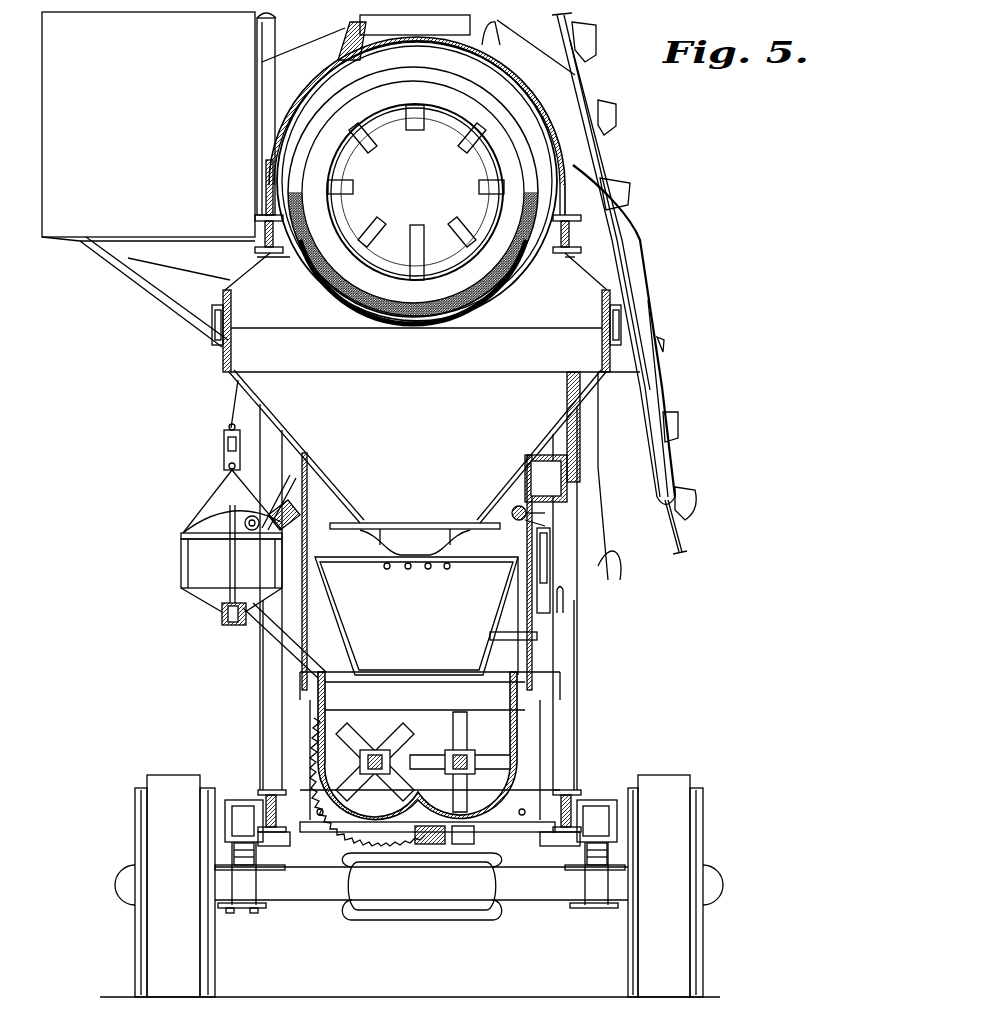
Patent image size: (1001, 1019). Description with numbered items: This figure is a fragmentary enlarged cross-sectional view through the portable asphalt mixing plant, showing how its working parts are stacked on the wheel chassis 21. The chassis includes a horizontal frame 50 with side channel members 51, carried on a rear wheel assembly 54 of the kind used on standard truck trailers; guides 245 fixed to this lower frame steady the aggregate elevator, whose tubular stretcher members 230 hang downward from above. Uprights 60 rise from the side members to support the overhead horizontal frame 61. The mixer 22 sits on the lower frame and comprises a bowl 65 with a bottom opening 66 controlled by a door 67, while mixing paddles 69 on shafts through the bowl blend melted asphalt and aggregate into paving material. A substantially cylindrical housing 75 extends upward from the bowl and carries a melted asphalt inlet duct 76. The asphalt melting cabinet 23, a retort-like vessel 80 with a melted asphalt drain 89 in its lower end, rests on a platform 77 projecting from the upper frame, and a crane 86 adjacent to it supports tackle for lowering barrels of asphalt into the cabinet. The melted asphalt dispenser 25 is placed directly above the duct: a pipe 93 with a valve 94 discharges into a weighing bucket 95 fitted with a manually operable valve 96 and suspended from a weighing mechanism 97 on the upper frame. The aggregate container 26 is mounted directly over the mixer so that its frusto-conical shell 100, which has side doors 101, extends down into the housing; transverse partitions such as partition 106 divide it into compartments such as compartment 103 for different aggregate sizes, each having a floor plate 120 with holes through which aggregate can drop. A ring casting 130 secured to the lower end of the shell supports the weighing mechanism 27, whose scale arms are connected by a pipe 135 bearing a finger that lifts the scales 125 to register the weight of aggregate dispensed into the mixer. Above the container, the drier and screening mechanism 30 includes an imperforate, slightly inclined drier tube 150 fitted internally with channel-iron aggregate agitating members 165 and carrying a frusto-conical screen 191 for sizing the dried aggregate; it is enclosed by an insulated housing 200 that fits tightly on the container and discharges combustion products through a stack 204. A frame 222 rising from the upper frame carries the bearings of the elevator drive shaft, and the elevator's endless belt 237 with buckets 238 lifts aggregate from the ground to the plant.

The asphalt melting cabinet 23 is at (152, 147).
The crane 86 is at (258, 42).
The stack 204 is at (343, 36).
The frame 222 is at (330, 48).
The horizontal frame 61 is at (256, 228).
The retort-like vessel 80 is at (72, 238).
The platform 77 is at (150, 290).
The melted asphalt drain 89 is at (222, 270).
The side doors 101 is at (218, 310).
The transverse partition 106 is at (442, 408).
The compartment 103 is at (272, 386).
The weighing mechanism 97 is at (222, 445).
The pipe 93 is at (215, 518).
The valve 94 is at (288, 522).
The melted asphalt dispenser 25 is at (205, 556).
The weighing bucket 95 is at (198, 575).
The manually operable valve 96 is at (228, 612).
The cylindrical housing 75 is at (262, 637).
The melted asphalt inlet duct 76 is at (258, 655).
The uprights 60 is at (268, 716).
The floor plates 120 is at (410, 522).
The ring casting 130 is at (352, 520).
The weighing mechanism 27 is at (487, 628).
The pipe 135 is at (528, 514).
The scales 125 is at (552, 570).
The aggregate container 26 is at (540, 410).
The mixer 22 is at (535, 738).
The mixing paddles 69 is at (372, 738).
The bowl 65 is at (528, 778).
The side channel members 51 is at (360, 787).
The bottom opening 66 is at (432, 845).
The door 67 is at (458, 845).
The wheel chassis 21 is at (262, 796).
The horizontal frame 50 is at (567, 803).
The guides 245 is at (615, 785).
The rear wheel assembly 54 is at (668, 922).
The frusto-conical screen 191 is at (503, 282).
The drier tube 150 is at (492, 158).
The aggregate agitating members 165 is at (455, 142).
The housing 200 is at (578, 165).
The endless belt 237 is at (588, 88).
The buckets 238 is at (615, 110).
The drier and screening mechanism 30 is at (553, 86).
The tubular stretcher members 230 is at (652, 335).
The frusto-conical shell 100 is at (605, 374).